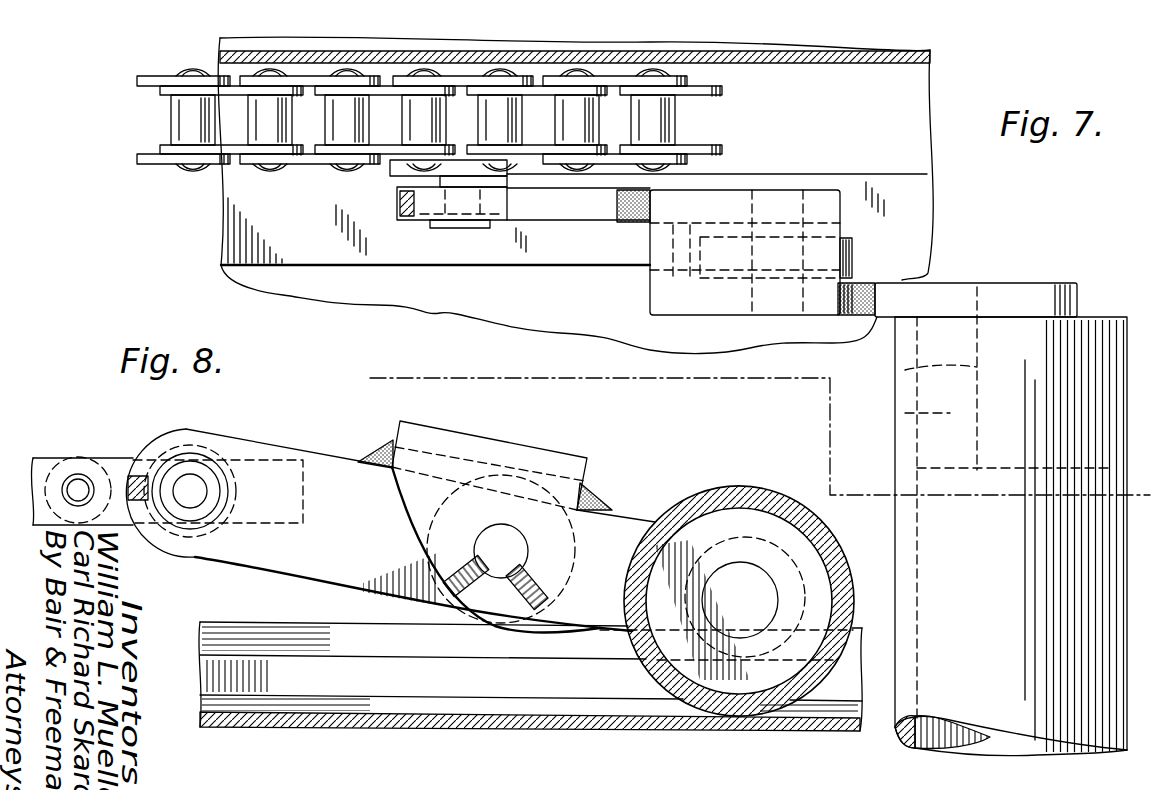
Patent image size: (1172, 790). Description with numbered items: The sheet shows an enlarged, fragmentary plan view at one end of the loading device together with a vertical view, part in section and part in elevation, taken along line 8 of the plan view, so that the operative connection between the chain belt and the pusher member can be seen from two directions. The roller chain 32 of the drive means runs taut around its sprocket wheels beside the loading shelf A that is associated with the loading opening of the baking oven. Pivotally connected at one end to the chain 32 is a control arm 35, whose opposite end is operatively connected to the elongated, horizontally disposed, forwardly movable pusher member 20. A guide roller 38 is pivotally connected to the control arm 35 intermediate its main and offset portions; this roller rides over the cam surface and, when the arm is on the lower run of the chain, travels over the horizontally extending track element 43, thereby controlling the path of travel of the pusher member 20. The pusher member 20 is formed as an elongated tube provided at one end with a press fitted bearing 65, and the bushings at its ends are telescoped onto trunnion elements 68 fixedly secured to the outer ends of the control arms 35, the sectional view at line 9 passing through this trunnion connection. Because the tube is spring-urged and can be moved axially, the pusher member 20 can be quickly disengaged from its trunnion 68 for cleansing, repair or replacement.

In FIG. 7, the pusher member 20 is at (1132, 625).
In FIG. 8, the pusher member 20 is at (722, 488).
In FIG. 7, the roller chain 32 is at (328, 160).
In FIG. 8, the roller chain 32 is at (130, 470).
In FIG. 7, the control arm 35 is at (735, 300).
In FIG. 8, the control arm 35 is at (610, 527).
In FIG. 7, the guide roller 38 is at (852, 250).
In FIG. 8, the guide roller 38 is at (462, 613).
In FIG. 7, the track element 43 is at (593, 258).
In FIG. 8, the track element 43 is at (283, 608).
In FIG. 7, the bearing 65 is at (905, 413).
In FIG. 8, the bearing 65 is at (782, 556).
In FIG. 7, the trunnion element 68 is at (905, 378).
In FIG. 8, the trunnion element 68 is at (730, 578).
In FIG. 7, the loading shelf A is at (384, 297).
In FIG. 8, the loading shelf A is at (496, 722).
In FIG. 7, the section line 8— 8 is at (370, 362).
In FIG. 8, the section line 9— 9 is at (624, 597).